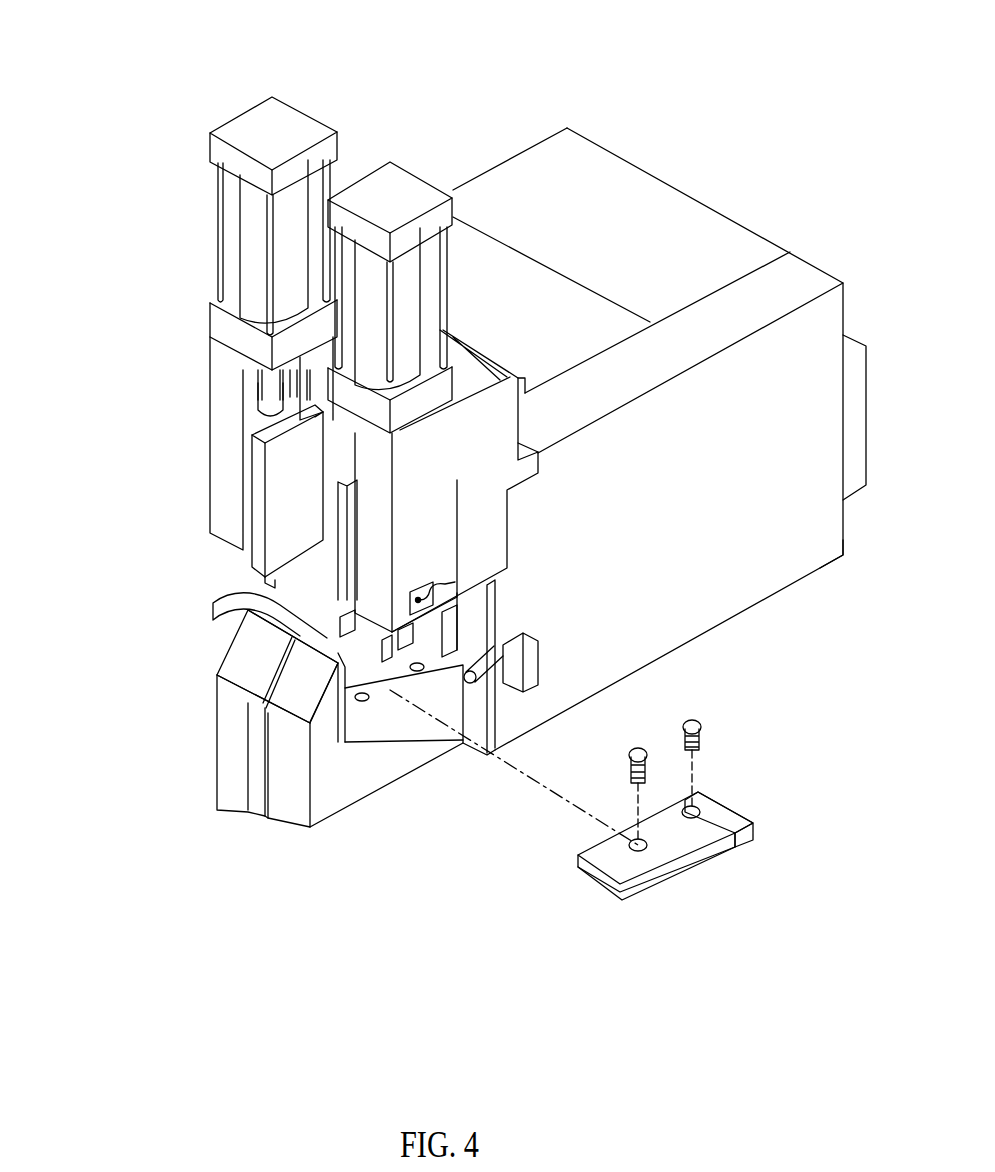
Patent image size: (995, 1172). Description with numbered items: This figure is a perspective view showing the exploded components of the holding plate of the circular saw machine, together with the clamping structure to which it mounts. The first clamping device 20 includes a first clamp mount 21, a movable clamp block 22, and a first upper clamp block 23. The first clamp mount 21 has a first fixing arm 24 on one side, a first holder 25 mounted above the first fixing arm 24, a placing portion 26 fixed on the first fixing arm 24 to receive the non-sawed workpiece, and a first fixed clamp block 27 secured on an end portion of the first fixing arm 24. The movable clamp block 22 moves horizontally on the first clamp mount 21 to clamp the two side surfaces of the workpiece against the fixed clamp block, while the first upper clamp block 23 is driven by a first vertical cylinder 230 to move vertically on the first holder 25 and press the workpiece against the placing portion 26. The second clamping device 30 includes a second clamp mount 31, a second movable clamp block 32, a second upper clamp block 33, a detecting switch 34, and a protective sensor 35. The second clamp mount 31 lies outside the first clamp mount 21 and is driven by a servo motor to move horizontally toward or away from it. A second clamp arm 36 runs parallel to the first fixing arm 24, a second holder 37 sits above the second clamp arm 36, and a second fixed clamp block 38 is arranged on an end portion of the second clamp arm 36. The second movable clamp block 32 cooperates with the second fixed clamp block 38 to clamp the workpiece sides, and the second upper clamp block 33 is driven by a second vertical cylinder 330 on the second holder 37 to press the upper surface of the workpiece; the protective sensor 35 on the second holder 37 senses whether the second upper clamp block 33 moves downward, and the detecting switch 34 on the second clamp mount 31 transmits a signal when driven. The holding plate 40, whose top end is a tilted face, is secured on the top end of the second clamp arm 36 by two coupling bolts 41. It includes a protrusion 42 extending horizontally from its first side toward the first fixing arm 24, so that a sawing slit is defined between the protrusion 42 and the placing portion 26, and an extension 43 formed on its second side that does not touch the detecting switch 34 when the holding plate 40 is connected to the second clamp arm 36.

The first clamping device 20 is at (478, 104).
The first clamp mount 21 is at (690, 230).
The movable clamp block 22 is at (300, 620).
The first upper clamp block 23 is at (270, 490).
The first fixing arm 24 is at (230, 778).
The first holder 25 is at (218, 402).
The placing portion 26 is at (285, 645).
The first fixed clamp block 27 is at (265, 705).
The second clamping device 30 is at (595, 394).
The second clamp mount 31 is at (817, 548).
The second movable clamp block 32 is at (415, 632).
The second upper clamp block 33 is at (345, 580).
The detecting switch 34 is at (510, 663).
The protective sensor 35 is at (435, 597).
The second clamp arm 36 is at (390, 760).
The second holder 37 is at (502, 425).
The second fixed clamp block 38 is at (290, 722).
The holding plate 40 is at (677, 836).
The coupling bolts 41 is at (628, 757).
The protrusion 42 is at (597, 845).
The extension 43 is at (757, 837).
The first vertical cylinder 230 is at (245, 128).
The second vertical cylinder 330 is at (385, 185).